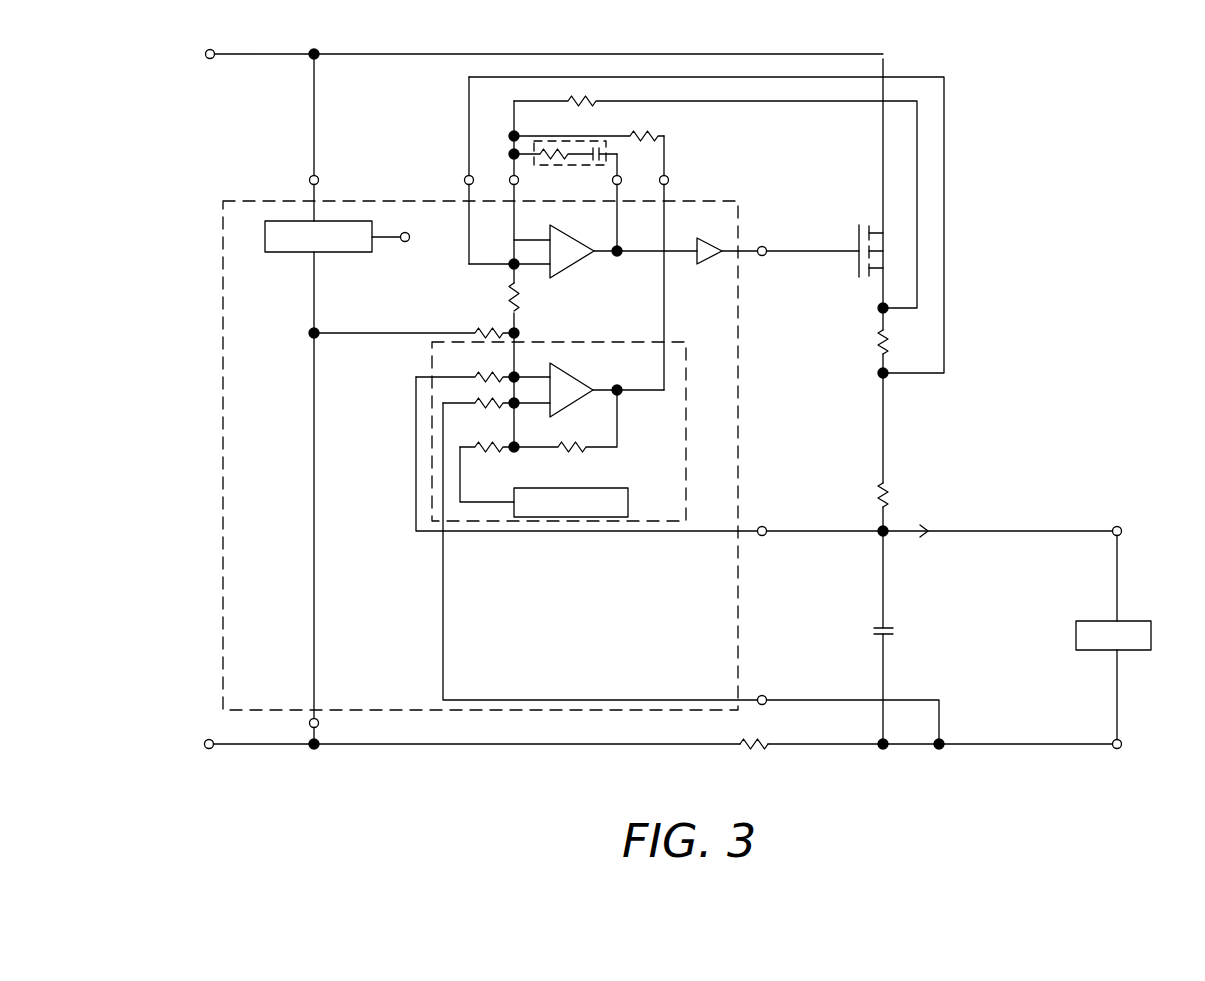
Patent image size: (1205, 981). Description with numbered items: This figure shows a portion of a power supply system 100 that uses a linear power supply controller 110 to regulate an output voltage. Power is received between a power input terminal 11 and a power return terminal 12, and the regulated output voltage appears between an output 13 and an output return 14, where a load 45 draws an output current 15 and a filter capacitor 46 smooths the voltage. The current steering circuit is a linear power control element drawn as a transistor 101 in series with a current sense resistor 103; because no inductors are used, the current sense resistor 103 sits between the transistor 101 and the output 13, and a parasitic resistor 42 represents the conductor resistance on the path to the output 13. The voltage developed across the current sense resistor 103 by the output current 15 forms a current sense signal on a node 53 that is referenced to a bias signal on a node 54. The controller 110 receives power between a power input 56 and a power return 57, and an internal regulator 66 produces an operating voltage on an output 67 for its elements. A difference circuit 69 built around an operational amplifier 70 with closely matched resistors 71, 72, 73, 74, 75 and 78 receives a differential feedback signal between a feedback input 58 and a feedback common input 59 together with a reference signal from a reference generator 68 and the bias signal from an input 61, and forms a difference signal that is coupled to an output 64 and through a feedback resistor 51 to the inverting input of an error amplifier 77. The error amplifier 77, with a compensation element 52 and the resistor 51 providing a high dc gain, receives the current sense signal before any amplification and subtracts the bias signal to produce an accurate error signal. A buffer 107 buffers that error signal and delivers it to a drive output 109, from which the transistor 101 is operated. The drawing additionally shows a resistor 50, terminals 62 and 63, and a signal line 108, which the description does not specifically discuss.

The power input terminal 11 is at (212, 50).
The power return terminal 12 is at (213, 725).
The output 13 is at (1117, 526).
The output return 14 is at (1121, 742).
The output current 15 is at (926, 536).
The parasitic resistor 42 is at (888, 492).
The load 45 is at (1098, 650).
The filter capacitor 46 is at (886, 638).
The feedback resistor 50 is at (580, 106).
The feedback resistor 51 is at (648, 140).
The compensation element 52 is at (545, 165).
The node 53 is at (886, 312).
The node 54 is at (888, 371).
The power input 56 is at (318, 180).
The power return 57 is at (318, 723).
The feedback input 58 is at (764, 535).
The feedback common input 59 is at (764, 696).
The input 61 is at (464, 180).
The terminal 62 is at (510, 180).
The terminal 63 is at (621, 182).
The output 64 is at (668, 178).
The internal regulator 66 is at (283, 252).
The output 67 is at (406, 241).
The reference generator 68 is at (628, 500).
The difference circuit 69 is at (686, 443).
The operational amplifier 70 is at (570, 404).
The resistor 71 is at (482, 398).
The resistor 72 is at (480, 451).
The resistor 73 is at (564, 451).
The resistor 74 is at (482, 372).
The resistor 75 is at (495, 328).
The error amplifier 77 is at (578, 264).
The resistor 78 is at (519, 295).
The power supply system 100 is at (792, 790).
The transistor 101 is at (864, 272).
The current sense resistor 103 is at (878, 340).
The buffer 107 is at (710, 260).
The drive signal line 108 is at (730, 245).
The drive output 109 is at (764, 246).
The linear power supply controller 110 is at (738, 632).